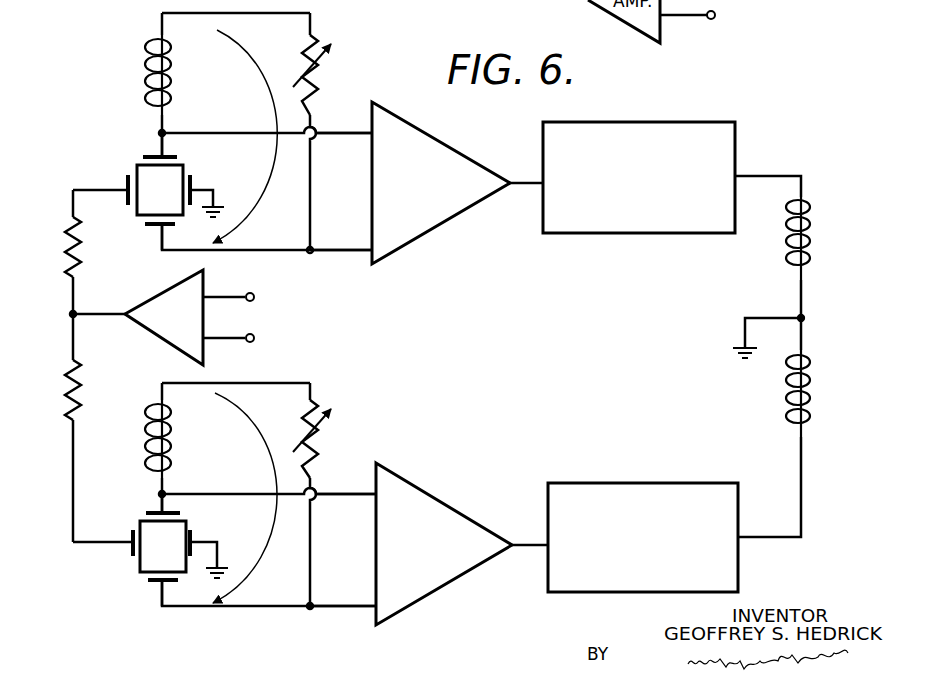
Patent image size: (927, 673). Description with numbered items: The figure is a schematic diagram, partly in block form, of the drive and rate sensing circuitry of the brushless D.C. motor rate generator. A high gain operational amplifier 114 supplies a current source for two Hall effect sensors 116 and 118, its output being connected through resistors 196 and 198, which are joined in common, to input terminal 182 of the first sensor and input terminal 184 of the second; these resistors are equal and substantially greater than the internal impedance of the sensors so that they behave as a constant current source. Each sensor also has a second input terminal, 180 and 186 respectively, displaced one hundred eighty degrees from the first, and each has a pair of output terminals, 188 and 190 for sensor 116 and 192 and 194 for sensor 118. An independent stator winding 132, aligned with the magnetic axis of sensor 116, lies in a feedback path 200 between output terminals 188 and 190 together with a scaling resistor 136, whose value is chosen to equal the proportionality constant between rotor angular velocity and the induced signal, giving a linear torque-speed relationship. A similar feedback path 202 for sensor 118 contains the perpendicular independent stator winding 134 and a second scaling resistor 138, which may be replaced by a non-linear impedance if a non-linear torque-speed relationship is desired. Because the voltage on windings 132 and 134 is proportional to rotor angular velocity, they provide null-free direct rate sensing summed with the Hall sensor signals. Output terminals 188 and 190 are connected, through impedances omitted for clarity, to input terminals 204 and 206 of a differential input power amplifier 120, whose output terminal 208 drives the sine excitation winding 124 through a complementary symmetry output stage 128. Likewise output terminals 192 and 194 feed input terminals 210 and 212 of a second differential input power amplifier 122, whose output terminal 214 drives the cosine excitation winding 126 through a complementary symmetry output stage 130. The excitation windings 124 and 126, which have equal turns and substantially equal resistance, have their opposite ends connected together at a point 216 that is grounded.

The operational amplifier 114 is at (170, 340).
The Hall effect sensor 116 is at (166, 209).
The Hall effect sensor 118 is at (166, 548).
The differential input power amplifier 120 is at (447, 147).
The differential input power amplifier 122 is at (456, 500).
The excitation winding 124 is at (815, 243).
The excitation winding 126 is at (814, 405).
The complementary symmetry output stage 128 is at (686, 108).
The complementary symmetry output stage 130 is at (644, 484).
The independent stator winding 132 is at (170, 88).
The independent stator winding 134 is at (170, 448).
The scaling resistor 136 is at (318, 82).
The scaling resistor 138 is at (318, 436).
The input terminal 180 is at (192, 178).
The input terminal 182 is at (128, 188).
The input terminal 184 is at (131, 548).
The input terminal 186 is at (192, 536).
The output terminal 188 is at (178, 157).
The output terminal 190 is at (152, 231).
The output terminal 192 is at (180, 513).
The output terminal 194 is at (152, 584).
The resistor 196 is at (63, 248).
The resistor 198 is at (63, 388).
The feedback path 200 is at (241, 47).
The feedback path 202 is at (240, 412).
The input terminal 204 is at (370, 142).
The input terminal 206 is at (372, 263).
The output terminal 208 is at (515, 182).
The input terminal 210 is at (372, 500).
The input terminal 212 is at (374, 604).
The output terminal 214 is at (517, 544).
The common point 216 is at (804, 318).